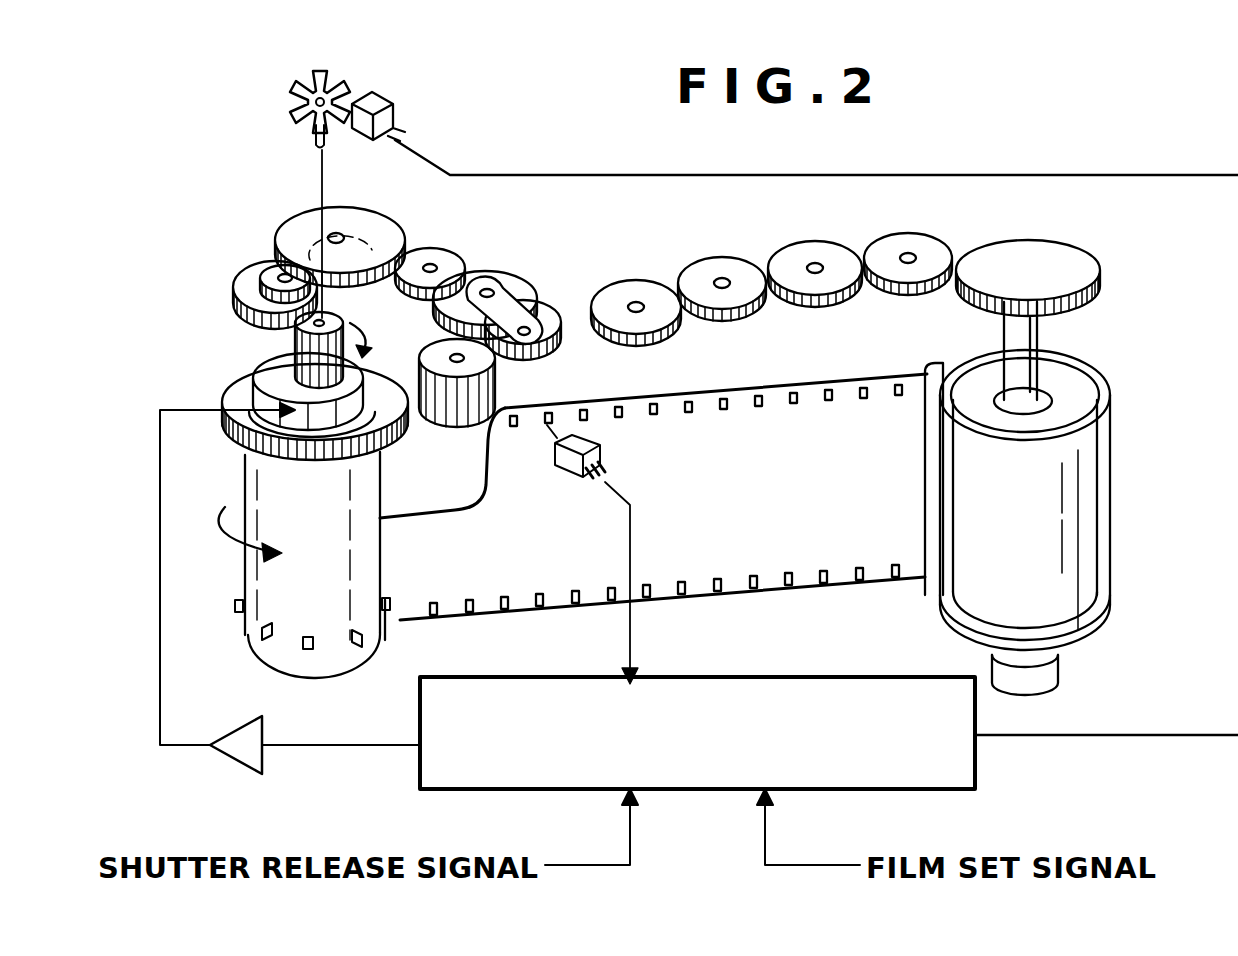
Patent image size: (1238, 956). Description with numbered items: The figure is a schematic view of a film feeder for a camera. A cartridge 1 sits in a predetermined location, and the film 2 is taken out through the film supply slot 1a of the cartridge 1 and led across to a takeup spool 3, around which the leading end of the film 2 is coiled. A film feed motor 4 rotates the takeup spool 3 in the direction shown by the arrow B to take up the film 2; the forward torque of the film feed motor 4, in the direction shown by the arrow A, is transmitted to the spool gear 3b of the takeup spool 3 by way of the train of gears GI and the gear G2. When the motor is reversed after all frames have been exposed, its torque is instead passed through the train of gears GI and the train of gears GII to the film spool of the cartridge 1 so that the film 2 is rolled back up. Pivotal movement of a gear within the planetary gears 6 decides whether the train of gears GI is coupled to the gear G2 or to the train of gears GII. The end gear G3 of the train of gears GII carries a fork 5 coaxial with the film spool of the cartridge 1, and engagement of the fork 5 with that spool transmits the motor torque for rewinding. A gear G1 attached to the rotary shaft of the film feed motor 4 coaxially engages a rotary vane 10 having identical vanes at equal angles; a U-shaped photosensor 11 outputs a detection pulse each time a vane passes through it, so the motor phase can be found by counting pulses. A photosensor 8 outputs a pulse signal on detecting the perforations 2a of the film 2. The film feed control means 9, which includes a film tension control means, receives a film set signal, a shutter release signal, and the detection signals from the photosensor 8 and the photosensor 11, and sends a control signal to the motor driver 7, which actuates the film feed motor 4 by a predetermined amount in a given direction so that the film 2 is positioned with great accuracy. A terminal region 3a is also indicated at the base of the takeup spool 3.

The cartridge 1 is at (1090, 518).
The film supply slot 1a is at (930, 365).
The film 2 is at (768, 583).
The perforations 2a is at (468, 605).
The takeup spool 3 is at (272, 655).
The motor terminal 3a is at (362, 655).
The spool gear 3b is at (240, 438).
The film feed motor 4 is at (285, 380).
The fork 5 is at (1048, 345).
The planetary gears 6 is at (510, 258).
The motor driver 7 is at (240, 752).
The photosensor 8 is at (600, 445).
The film feed control means 9 is at (712, 677).
The rotary vane 10 is at (288, 118).
The photosensor 11 is at (378, 100).
The gear G1 is at (297, 333).
The gear G2 is at (500, 395).
The end gear G3 is at (1078, 288).
The train of gears GI is at (475, 242).
The train of gears GII is at (818, 226).
The arrow A is at (374, 343).
The arrow B is at (234, 534).